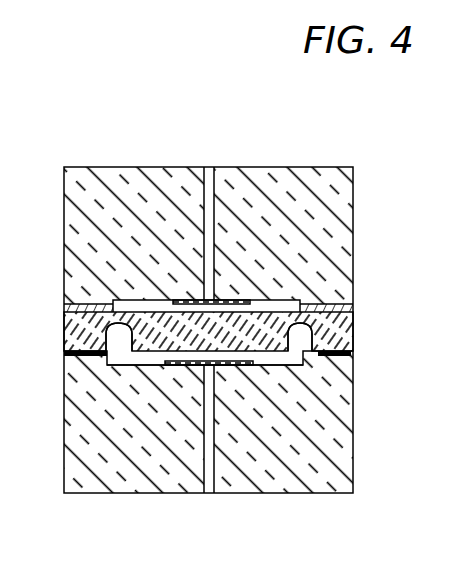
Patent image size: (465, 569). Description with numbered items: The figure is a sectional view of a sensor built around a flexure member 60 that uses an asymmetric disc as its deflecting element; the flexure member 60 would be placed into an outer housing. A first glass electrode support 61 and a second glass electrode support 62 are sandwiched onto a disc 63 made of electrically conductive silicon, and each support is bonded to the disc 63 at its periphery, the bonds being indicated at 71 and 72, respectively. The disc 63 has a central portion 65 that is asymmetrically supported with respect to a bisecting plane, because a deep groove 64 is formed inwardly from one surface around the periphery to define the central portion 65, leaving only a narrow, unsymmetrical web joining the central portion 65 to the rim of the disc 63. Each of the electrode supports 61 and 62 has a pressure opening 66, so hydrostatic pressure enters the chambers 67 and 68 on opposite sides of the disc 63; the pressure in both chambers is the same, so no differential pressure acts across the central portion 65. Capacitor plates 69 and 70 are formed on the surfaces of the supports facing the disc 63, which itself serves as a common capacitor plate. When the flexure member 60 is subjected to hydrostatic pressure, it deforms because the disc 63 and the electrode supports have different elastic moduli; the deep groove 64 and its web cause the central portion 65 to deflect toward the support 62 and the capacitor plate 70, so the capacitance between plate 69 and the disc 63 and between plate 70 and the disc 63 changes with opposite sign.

The flexure member 60 is at (296, 118).
The first glass electrode support 61 is at (340, 196).
The second glass electrode support 62 is at (344, 447).
The disc 63 is at (343, 327).
The deep groove 64 is at (120, 338).
The central portion 65 is at (243, 357).
The pressure opening 66 is at (210, 167).
The chamber 67 is at (298, 300).
The chamber 68 is at (160, 364).
The capacitor plate 69 is at (187, 297).
The capacitor plate 70 is at (140, 358).
The bond 71 is at (83, 306).
The bond 72 is at (72, 357).